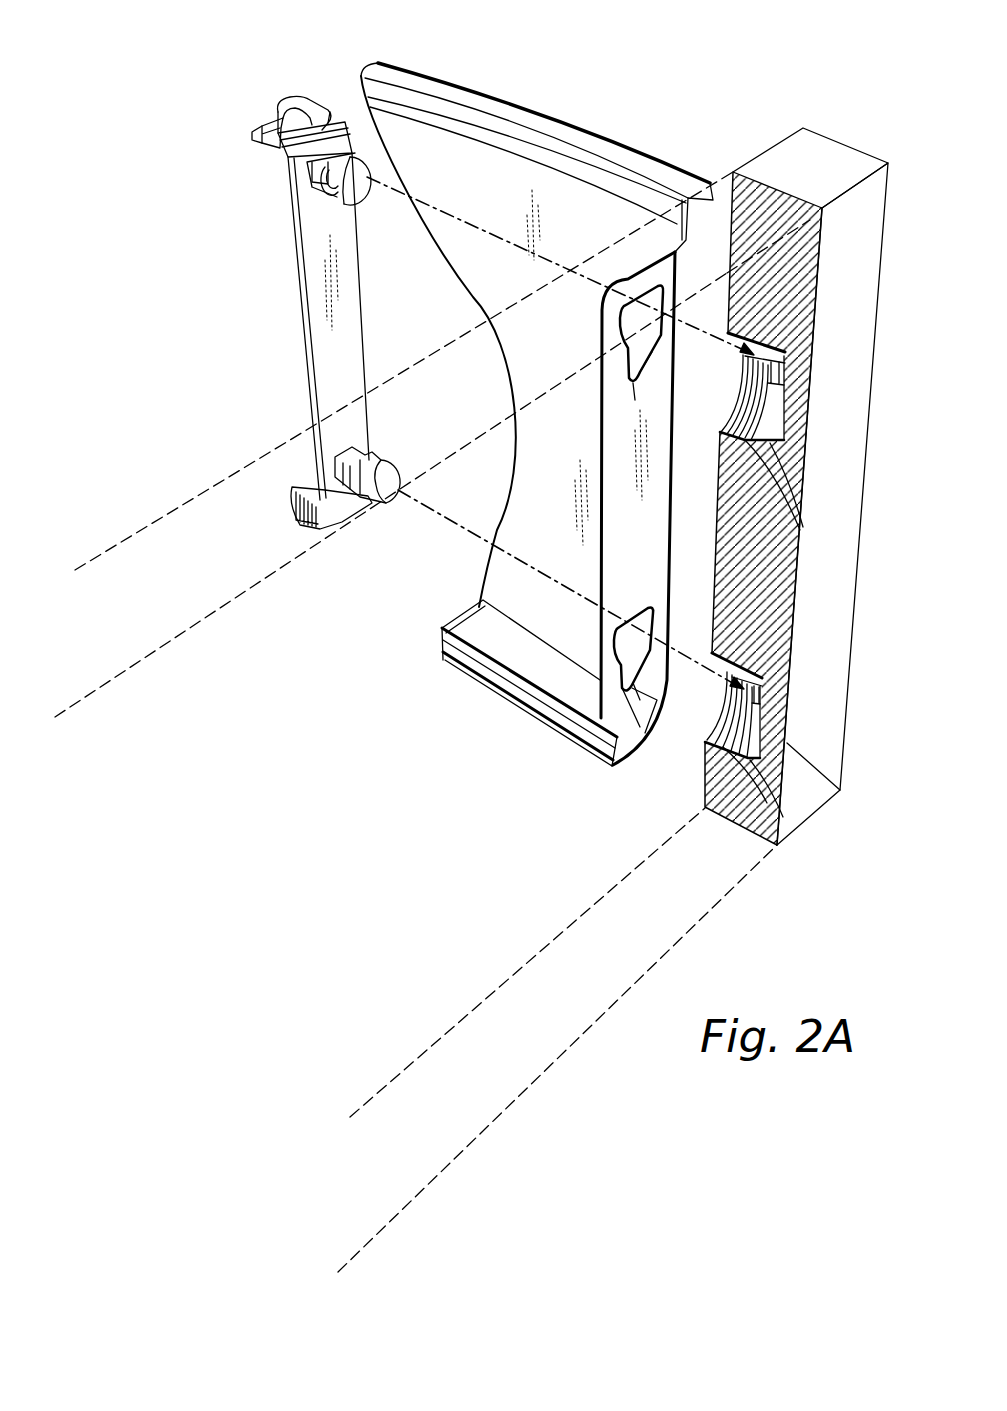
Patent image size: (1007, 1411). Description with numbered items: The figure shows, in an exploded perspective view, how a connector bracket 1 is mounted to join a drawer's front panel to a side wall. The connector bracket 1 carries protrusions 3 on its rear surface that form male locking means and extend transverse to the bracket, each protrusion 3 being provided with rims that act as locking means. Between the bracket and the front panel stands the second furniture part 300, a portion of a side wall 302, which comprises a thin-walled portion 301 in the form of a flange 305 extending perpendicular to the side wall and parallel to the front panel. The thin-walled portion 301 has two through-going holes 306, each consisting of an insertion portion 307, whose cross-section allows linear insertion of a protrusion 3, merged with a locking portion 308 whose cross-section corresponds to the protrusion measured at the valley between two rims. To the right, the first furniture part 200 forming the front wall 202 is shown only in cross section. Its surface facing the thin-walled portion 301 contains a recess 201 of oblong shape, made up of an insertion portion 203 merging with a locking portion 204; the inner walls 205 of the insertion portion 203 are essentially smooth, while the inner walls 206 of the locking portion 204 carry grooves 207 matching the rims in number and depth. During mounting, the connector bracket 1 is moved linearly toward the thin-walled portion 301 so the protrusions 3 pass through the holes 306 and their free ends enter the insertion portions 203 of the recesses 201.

The connector bracket 1 is at (310, 312).
The protrusion 3 is at (327, 190).
The first furniture part 200 is at (758, 486).
The recess 201 is at (743, 397).
The front wall 202 is at (843, 160).
The insertion portion 203 is at (780, 340).
The locking portion 204 is at (767, 427).
The inner walls 205 is at (777, 370).
The inner walls 206 is at (767, 443).
The grooves 207 is at (745, 440).
The second furniture part 300 is at (530, 392).
The thin-walled portion 301 is at (613, 512).
The side wall 302 is at (550, 177).
The flange 305 is at (484, 595).
The through-going hole 306 is at (626, 313).
The insertion portion 307 is at (623, 338).
The locking portion 308 is at (640, 370).